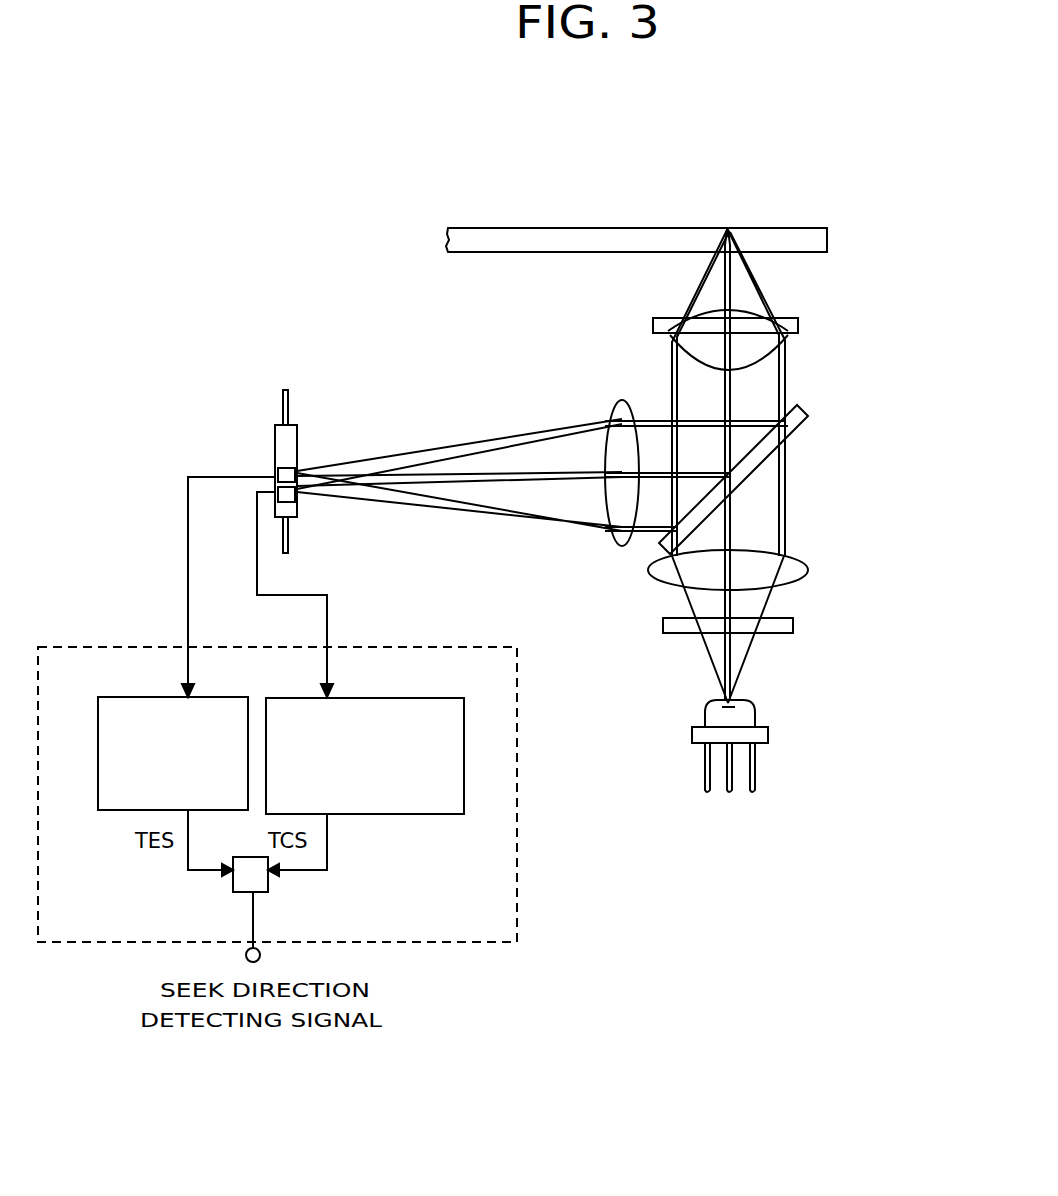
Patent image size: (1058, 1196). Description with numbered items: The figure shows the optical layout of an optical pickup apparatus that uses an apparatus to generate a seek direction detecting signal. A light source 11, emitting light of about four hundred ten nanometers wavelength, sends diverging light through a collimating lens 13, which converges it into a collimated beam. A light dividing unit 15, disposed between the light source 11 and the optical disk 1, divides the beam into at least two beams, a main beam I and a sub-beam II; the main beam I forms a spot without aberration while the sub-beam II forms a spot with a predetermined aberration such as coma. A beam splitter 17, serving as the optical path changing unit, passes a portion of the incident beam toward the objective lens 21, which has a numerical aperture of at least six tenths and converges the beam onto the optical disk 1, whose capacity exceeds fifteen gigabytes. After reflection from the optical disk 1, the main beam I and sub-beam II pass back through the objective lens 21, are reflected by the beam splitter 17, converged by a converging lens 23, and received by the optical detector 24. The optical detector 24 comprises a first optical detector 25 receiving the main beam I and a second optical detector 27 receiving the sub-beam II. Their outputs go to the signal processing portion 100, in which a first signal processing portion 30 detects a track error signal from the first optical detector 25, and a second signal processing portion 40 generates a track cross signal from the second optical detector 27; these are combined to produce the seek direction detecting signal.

The optical disk 1 is at (828, 233).
The objective lens 21 is at (798, 326).
The beam splitter 17 is at (791, 424).
The collimating lens 13 is at (806, 571).
The light dividing unit 15 is at (793, 625).
The light source 11 is at (768, 733).
The converging lens 23 is at (622, 547).
The optical detector 24 is at (267, 469).
The first optical detector 25 is at (297, 468).
The second optical detector 27 is at (277, 477).
The first signal processing portion 30 is at (127, 811).
The second signal processing portion 40 is at (357, 814).
The signal processing portion 100 is at (517, 883).
The main beam I is at (768, 300).
The sub-beam II is at (693, 298).